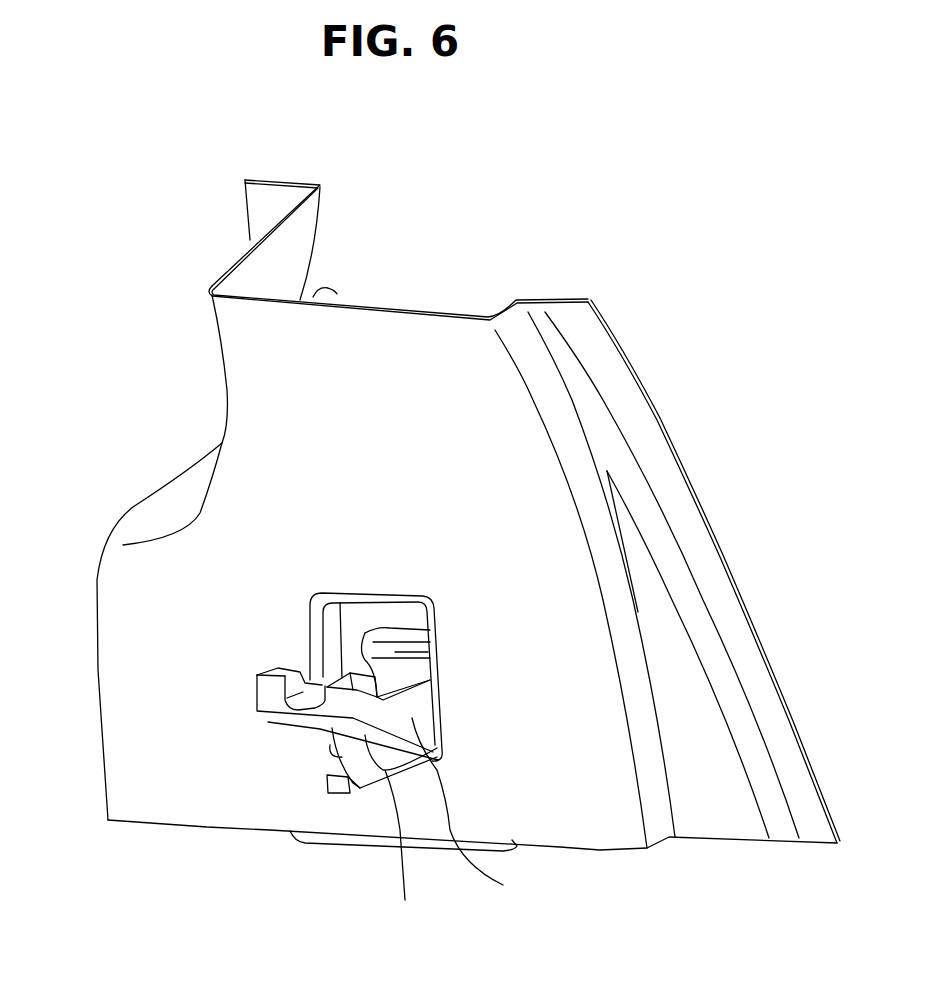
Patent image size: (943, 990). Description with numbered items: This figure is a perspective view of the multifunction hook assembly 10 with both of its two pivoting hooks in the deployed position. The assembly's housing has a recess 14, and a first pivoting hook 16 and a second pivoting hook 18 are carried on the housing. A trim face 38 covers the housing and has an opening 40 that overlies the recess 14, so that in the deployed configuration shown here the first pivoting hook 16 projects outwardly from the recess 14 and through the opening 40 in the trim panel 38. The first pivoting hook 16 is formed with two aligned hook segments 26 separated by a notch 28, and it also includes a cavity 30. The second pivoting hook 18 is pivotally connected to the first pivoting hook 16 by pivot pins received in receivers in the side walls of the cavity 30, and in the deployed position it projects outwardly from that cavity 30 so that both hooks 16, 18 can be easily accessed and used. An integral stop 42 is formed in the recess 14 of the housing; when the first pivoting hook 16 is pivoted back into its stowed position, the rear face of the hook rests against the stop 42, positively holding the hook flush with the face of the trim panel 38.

The multifunction hook assembly 10 is at (125, 273).
The trim face 38 is at (380, 342).
The recess 14 is at (378, 620).
The opening 40 is at (335, 602).
The stop 42 is at (402, 650).
The hook segments 26 is at (265, 690).
The notch 28 is at (307, 697).
The cavity 30 is at (338, 738).
The first pivoting hook 16 is at (413, 807).
The second pivoting hook 18 is at (375, 850).